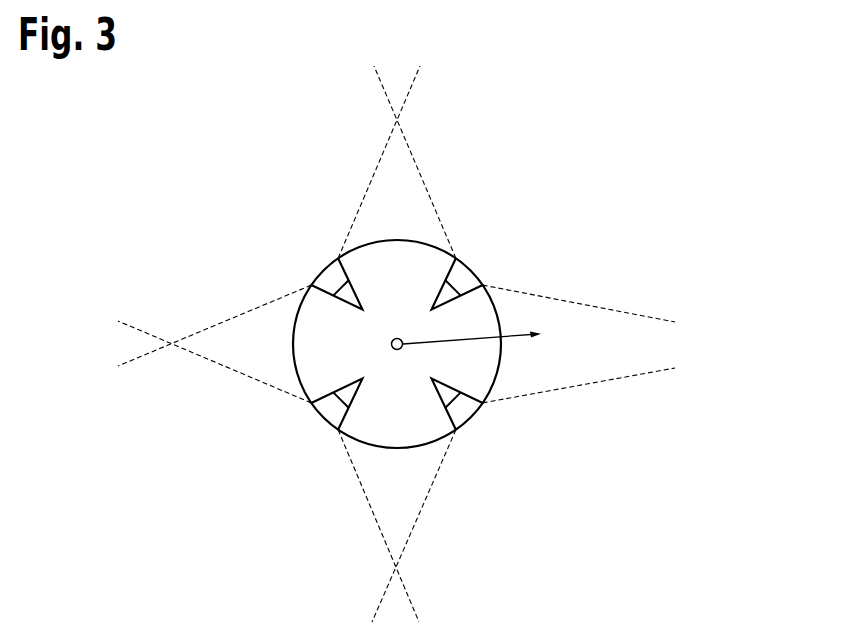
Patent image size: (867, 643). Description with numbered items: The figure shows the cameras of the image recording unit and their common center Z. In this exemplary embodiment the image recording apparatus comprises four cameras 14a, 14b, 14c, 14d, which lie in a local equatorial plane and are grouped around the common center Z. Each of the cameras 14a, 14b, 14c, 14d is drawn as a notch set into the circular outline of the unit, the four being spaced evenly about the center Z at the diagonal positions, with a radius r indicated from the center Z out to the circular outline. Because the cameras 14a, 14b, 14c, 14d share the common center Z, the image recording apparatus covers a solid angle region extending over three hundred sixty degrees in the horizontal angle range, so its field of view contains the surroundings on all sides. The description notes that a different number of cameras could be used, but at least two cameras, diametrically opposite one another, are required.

The camera 14a is at (335, 408).
The camera 14b is at (459, 408).
The camera 14c is at (459, 280).
The camera 14d is at (335, 280).
The common center Z is at (394, 364).
The radius r is at (472, 324).